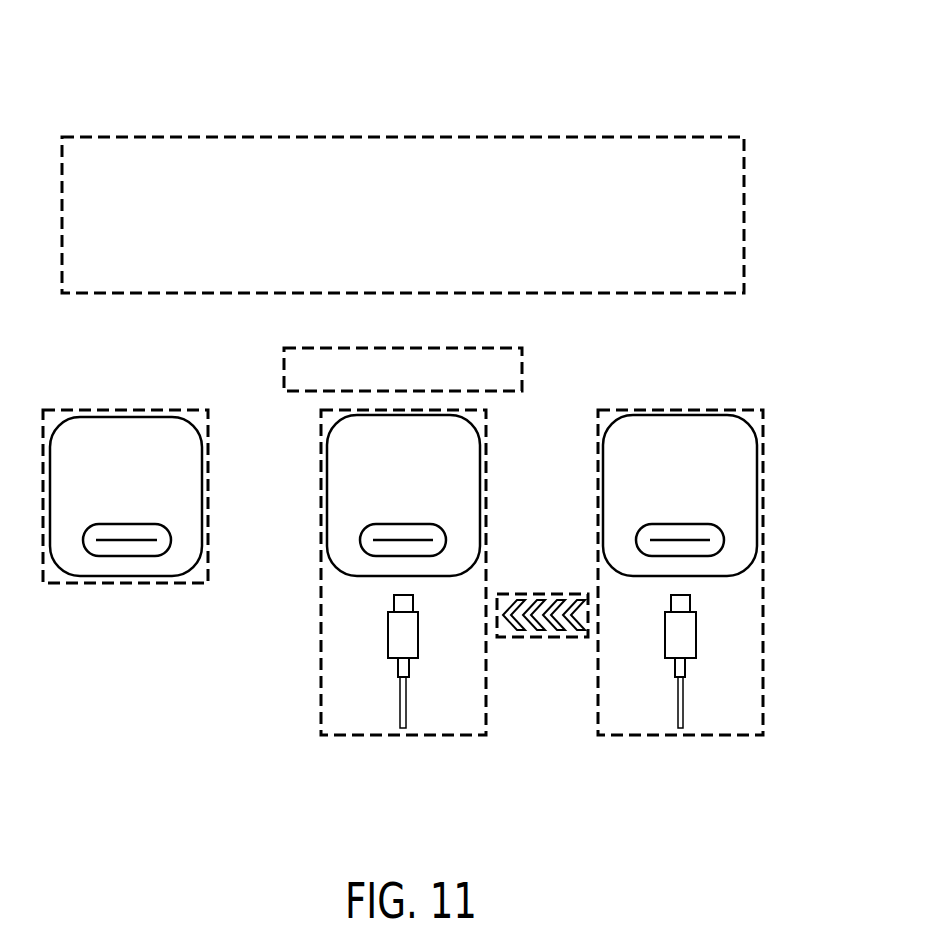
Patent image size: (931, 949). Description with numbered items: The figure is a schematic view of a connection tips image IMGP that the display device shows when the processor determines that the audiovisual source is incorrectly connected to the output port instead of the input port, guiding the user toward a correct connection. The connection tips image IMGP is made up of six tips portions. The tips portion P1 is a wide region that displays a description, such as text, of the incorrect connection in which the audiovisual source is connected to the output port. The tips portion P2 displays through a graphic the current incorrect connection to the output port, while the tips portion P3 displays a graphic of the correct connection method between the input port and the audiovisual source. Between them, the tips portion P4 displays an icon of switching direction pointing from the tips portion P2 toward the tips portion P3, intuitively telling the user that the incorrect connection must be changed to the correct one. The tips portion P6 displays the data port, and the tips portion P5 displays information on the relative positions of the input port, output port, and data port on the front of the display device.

The connection tips image IMGP is at (674, 67).
The tips portion P1 is at (690, 136).
The tips portion P2 is at (712, 737).
The tips portion P3 is at (435, 737).
The tips portion P4 is at (517, 637).
The tips portion P5 is at (470, 347).
The tips portion P6 is at (157, 583).